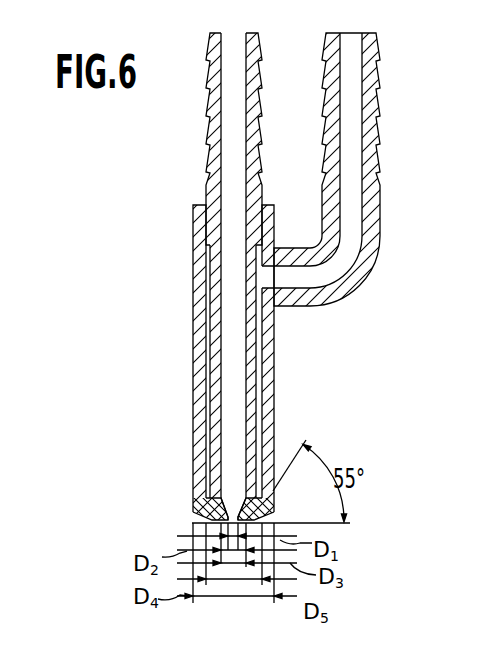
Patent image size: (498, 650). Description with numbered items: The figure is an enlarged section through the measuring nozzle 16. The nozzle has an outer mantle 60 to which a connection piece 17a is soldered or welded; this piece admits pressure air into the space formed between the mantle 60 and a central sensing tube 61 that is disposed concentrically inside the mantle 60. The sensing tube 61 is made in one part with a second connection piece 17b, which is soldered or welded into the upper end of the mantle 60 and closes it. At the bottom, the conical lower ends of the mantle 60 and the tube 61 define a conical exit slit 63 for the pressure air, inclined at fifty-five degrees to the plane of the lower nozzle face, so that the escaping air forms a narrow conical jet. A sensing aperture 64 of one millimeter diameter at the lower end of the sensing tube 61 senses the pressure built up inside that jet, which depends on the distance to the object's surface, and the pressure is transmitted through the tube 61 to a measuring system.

The measuring nozzle 16 is at (249, 280).
The connection piece 17a is at (374, 187).
The connection piece 17b is at (207, 182).
The outer mantle 60 is at (266, 386).
The central sensing tube 61 is at (215, 390).
The conical exit slit 63 is at (193, 513).
The sensing aperture 64 is at (231, 508).